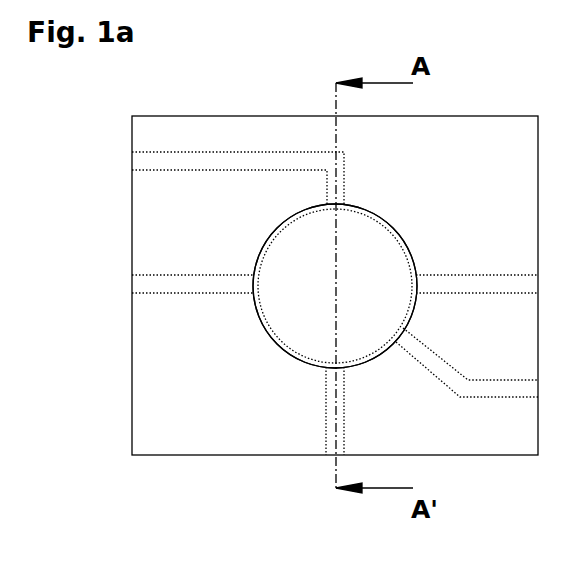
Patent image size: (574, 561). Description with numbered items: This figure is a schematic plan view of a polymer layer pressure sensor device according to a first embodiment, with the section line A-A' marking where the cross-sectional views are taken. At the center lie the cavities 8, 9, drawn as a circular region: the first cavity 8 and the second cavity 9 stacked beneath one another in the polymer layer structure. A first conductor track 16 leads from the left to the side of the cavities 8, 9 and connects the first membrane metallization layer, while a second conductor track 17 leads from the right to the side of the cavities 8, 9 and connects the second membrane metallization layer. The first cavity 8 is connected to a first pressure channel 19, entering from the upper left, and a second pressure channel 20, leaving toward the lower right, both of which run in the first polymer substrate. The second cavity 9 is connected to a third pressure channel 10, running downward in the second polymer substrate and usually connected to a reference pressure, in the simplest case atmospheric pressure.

The first cavity 8 is at (383, 248).
The second cavity 9 is at (335, 286).
The third pressure channel 10 is at (342, 413).
The first conductor track 16 is at (192, 288).
The second conductor track 17 is at (484, 283).
The first pressure channel 19 is at (197, 159).
The second pressure channel 20 is at (508, 387).